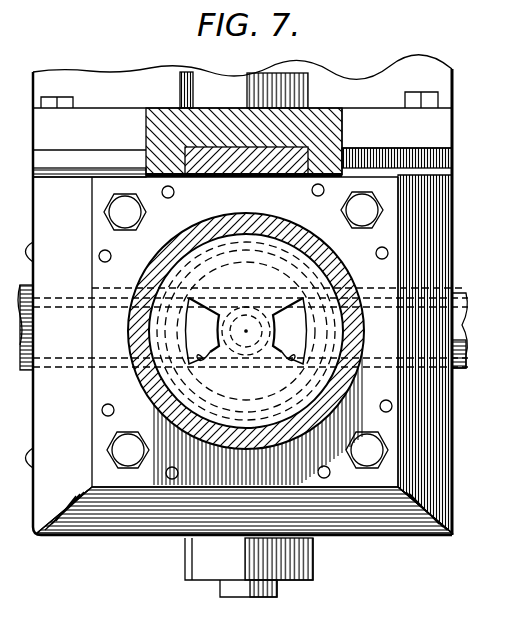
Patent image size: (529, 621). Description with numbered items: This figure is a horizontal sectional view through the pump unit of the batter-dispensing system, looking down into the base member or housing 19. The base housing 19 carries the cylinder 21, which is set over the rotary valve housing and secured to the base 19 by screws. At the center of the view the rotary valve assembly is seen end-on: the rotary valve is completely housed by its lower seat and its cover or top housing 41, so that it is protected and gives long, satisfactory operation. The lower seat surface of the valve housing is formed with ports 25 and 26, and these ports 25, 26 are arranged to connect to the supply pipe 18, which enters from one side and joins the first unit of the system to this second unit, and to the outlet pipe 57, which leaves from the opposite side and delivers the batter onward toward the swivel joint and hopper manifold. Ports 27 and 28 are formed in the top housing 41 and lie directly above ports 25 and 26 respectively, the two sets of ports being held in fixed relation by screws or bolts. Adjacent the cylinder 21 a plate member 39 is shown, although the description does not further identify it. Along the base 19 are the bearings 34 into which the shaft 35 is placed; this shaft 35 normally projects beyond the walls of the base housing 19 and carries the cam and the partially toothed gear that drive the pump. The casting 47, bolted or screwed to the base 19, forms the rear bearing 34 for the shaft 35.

The supply pipe 18 is at (30, 290).
The base member or housing 19 is at (264, 302).
The cylinder 21 is at (157, 262).
The port 25 is at (193, 317).
The port 26 is at (297, 315).
The port 27 is at (198, 362).
The port 28 is at (294, 362).
The bearing 34 is at (303, 558).
The shaft 35 is at (257, 595).
The plate 39 is at (214, 170).
The cover or top housing 41 is at (288, 248).
The casting 47 is at (163, 115).
The outlet pipe 57 is at (465, 298).